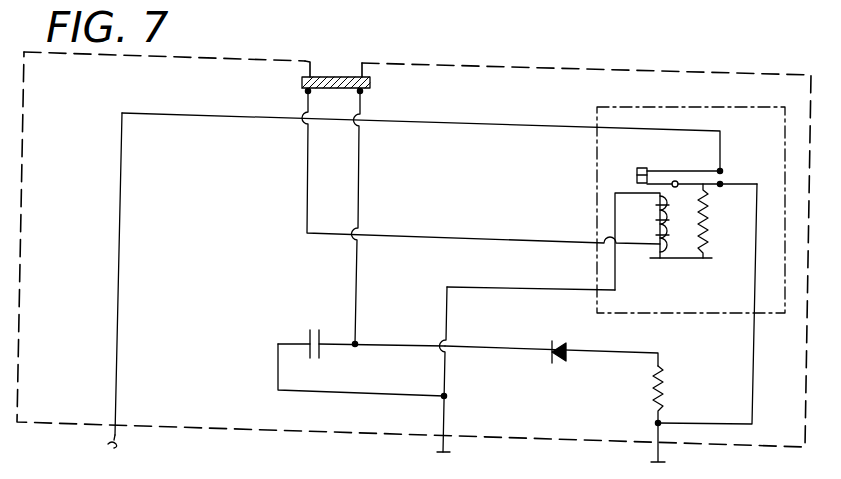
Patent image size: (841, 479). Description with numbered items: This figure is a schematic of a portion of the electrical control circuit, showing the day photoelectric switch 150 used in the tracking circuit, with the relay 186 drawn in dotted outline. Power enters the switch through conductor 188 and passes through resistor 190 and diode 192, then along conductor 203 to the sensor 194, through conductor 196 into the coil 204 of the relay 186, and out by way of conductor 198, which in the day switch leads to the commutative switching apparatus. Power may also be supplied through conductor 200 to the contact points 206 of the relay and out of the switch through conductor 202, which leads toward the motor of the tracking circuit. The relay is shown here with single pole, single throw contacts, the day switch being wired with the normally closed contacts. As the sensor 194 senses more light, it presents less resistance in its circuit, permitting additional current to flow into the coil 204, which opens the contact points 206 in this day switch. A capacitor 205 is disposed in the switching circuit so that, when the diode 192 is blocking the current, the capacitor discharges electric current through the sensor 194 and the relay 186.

The day photoelectric switch 150 is at (600, 198).
The relay 186 is at (597, 113).
The conductor 188 is at (652, 455).
The resistor 190 is at (660, 376).
The diode 192 is at (554, 362).
The sensor 194 is at (302, 79).
The conductor 196 is at (447, 232).
The conductor 198 is at (460, 287).
The conductor 200 is at (690, 422).
The conductor 202 is at (113, 433).
The conductor 203 is at (360, 181).
The coil 204 is at (672, 223).
The capacitor 205 is at (307, 338).
The contact points 206 is at (641, 168).